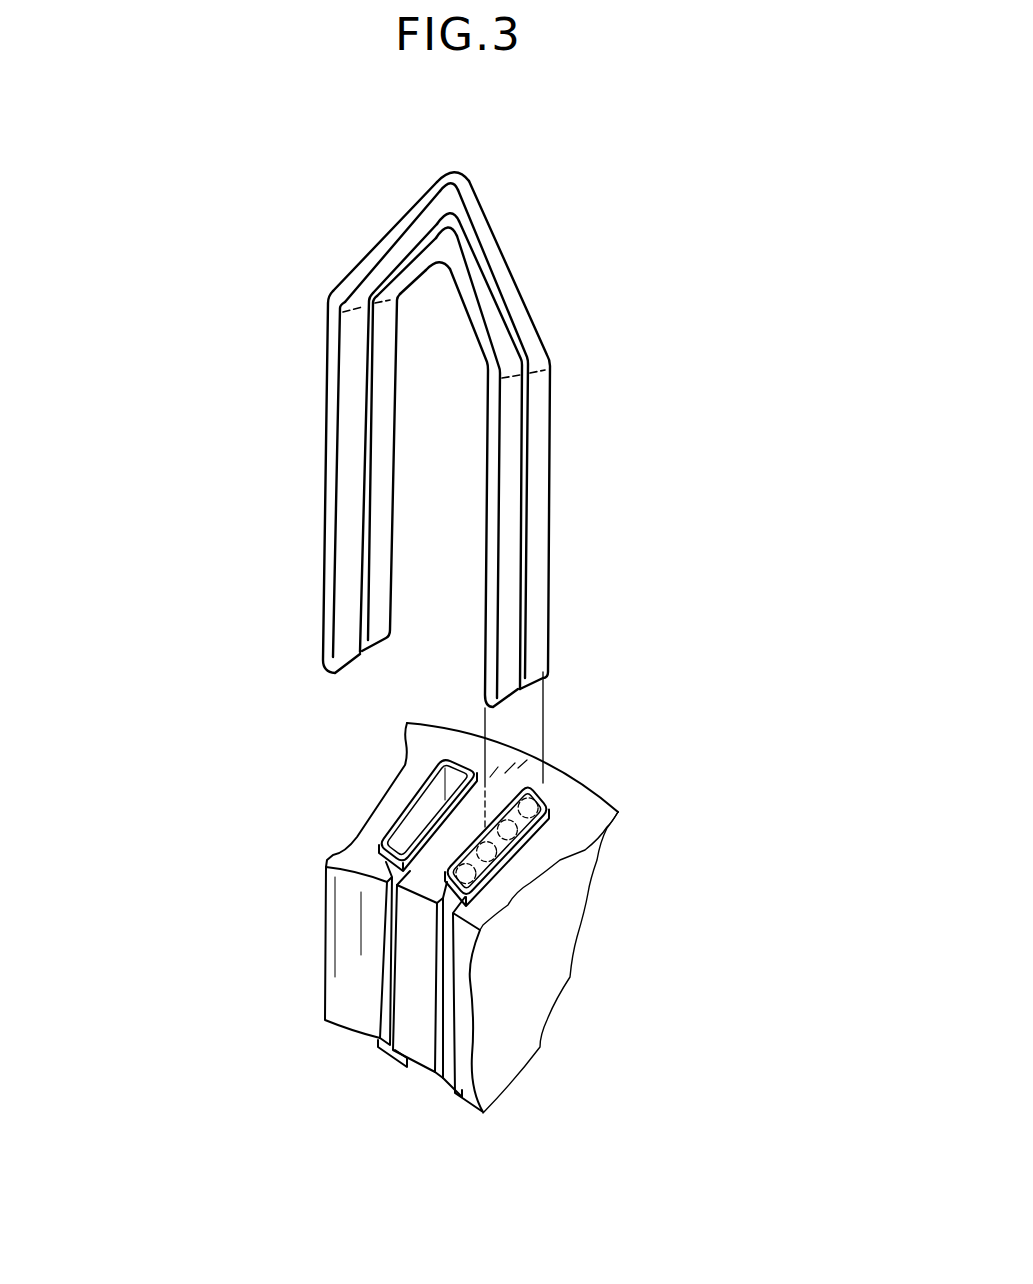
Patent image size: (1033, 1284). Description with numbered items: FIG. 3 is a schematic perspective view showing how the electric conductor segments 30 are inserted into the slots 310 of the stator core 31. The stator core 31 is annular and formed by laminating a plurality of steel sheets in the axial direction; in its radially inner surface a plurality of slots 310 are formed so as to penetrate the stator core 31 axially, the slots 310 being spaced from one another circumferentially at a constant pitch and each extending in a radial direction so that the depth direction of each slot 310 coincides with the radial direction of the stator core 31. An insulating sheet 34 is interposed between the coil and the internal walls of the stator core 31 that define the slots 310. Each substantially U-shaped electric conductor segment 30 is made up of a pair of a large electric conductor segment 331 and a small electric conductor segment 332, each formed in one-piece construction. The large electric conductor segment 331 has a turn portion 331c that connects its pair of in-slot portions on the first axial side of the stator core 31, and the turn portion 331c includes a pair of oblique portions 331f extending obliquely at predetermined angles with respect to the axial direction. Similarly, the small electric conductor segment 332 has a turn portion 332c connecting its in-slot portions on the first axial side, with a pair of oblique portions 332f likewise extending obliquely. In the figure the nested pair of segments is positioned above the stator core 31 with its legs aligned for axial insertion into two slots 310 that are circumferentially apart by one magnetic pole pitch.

The electric conductor segment 30 is at (583, 285).
The large electric conductor segment 331 is at (498, 265).
The small electric conductor segment 332 is at (510, 357).
The turn portion 331c is at (462, 184).
The turn portion 332c is at (452, 232).
The oblique portion 331f is at (400, 245).
The oblique portion 332f is at (398, 285).
The stator core 31 is at (593, 803).
The insulating sheet 34 is at (550, 788).
The slot 310 is at (392, 951).